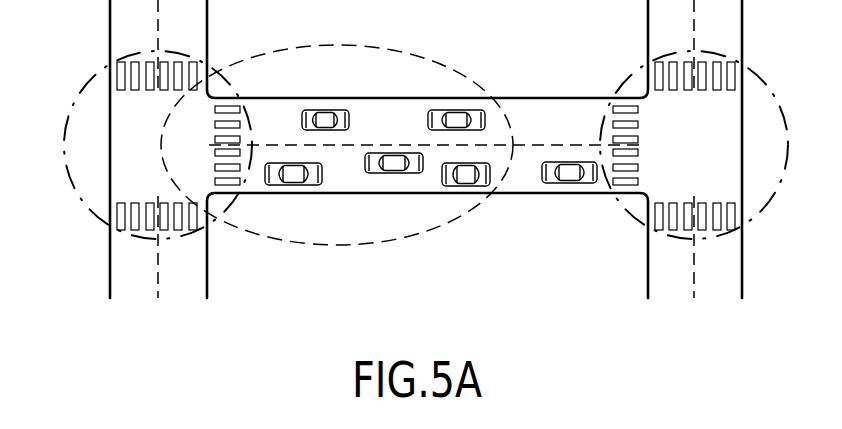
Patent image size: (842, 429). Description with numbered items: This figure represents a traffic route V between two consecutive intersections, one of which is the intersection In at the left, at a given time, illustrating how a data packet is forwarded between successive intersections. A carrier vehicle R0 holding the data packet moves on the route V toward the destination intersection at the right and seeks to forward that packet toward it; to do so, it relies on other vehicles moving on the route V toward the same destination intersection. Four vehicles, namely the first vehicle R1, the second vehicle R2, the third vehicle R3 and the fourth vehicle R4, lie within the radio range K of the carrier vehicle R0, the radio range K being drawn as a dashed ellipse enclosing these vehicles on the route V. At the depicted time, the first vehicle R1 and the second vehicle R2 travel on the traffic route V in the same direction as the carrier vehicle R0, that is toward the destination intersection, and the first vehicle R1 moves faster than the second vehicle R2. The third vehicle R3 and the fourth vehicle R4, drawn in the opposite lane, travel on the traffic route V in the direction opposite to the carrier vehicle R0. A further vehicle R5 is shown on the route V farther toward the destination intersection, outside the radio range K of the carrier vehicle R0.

The intersection In is at (92, 74).
The traffic route V is at (535, 98).
The radio range K is at (337, 247).
The carrier vehicle R0 is at (288, 177).
The first vehicle R1 is at (389, 163).
The second vehicle R2 is at (462, 188).
The third vehicle R3 is at (310, 110).
The fourth vehicle R4 is at (463, 110).
The vehicle R5 is at (573, 185).